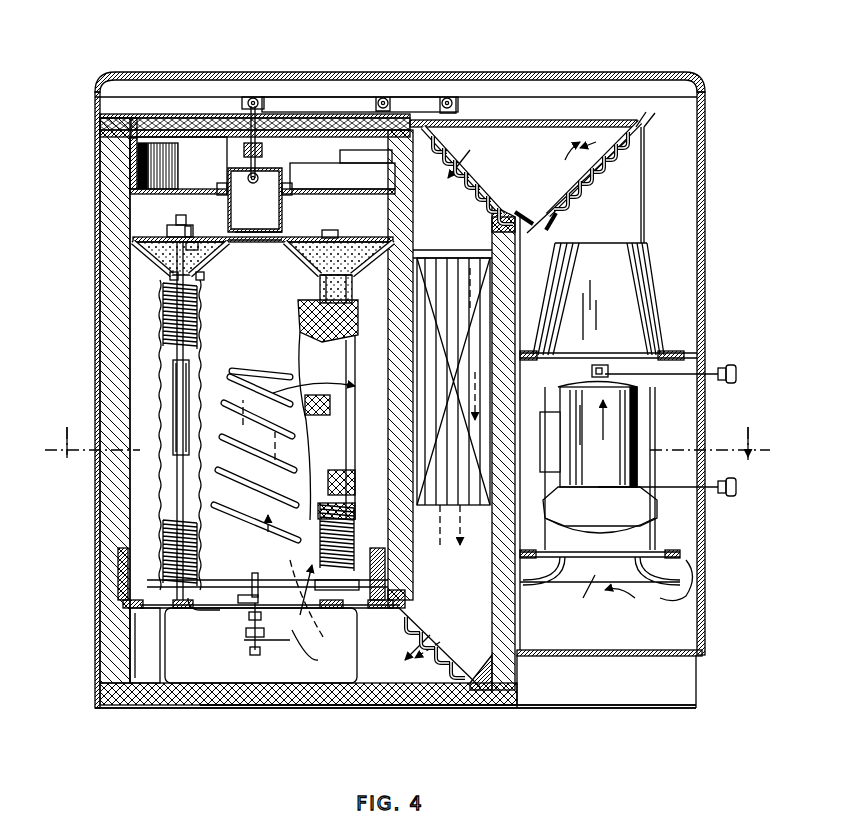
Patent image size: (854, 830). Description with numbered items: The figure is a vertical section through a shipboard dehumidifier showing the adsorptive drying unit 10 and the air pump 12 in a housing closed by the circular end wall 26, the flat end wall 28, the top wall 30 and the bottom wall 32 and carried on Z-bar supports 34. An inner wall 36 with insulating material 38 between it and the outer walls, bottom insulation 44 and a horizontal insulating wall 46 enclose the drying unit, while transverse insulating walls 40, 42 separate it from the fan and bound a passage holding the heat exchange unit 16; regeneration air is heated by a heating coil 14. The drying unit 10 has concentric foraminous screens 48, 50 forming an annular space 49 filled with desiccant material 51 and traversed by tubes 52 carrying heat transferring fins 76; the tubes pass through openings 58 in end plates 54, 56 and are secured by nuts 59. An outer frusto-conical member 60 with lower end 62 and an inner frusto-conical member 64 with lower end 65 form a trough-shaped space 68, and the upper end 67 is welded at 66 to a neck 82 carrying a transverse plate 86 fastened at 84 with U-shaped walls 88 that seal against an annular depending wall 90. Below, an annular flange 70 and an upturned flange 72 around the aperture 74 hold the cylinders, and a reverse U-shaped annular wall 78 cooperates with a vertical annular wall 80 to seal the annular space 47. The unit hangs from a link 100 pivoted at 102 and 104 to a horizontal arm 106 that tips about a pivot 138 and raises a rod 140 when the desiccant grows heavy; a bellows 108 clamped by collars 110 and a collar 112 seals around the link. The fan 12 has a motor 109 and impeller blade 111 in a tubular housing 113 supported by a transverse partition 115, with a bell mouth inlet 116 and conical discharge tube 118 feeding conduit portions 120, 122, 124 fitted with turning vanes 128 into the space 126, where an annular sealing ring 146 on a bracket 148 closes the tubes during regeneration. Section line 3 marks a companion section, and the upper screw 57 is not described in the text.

The section line 3— 3 is at (407, 434).
The drying unit 10 is at (147, 349).
The air pump 12 is at (585, 598).
The heating coil 14 is at (252, 370).
The heat exchange unit 16 is at (484, 305).
The circular end wall 26 is at (99, 275).
The flat end wall 28 is at (698, 624).
The top wall 30 is at (311, 72).
The bottom wall 32 is at (543, 657).
The Z-bar supports 34 is at (290, 708).
The inner wall 36 is at (118, 323).
The insulating material 38 is at (100, 118).
The transverse insulating wall 40 is at (492, 250).
The transverse insulating wall 42 is at (415, 225).
The bottom insulation 44 is at (140, 706).
The horizontal insulating wall 46 is at (167, 116).
The annular space 47 is at (178, 393).
The outer cylindrical foraminous screen 48 is at (312, 335).
The annular space 49 is at (173, 473).
The inner cylindrical foraminous screen 50 is at (198, 318).
The desiccant material 51 is at (352, 265).
The tubes 52 is at (172, 223).
The end plate 54 is at (364, 548).
The end plate 56 is at (288, 238).
The drive shaft 57 is at (174, 592).
The openings 58 is at (339, 238).
The nuts 59 is at (192, 229).
The outer frusto-conical member 60 is at (158, 262).
The lower end of outer frusto-conical member 62 is at (170, 279).
The inner frusto-conical member 64 is at (227, 251).
The lower end of inner frusto-conical member 65 is at (205, 278).
The weld 66 is at (278, 231).
The upper end of inner frusto-conical member 67 is at (237, 238).
The annular trough-shaped space 68 is at (194, 258).
The annular flange 70 is at (160, 575).
The upturned flange 72 is at (201, 580).
The aperture 74 is at (267, 571).
The heat transferring fins 76 is at (198, 511).
The reverse U-shaped annular wall 78 is at (118, 552).
The vertical annular wall 80 is at (138, 596).
The neck 82 is at (284, 173).
The fastening 84 is at (216, 185).
The transverse plate 86 is at (333, 173).
The U-shaped walls 88 is at (333, 188).
The annular depending wall 90 is at (135, 135).
The link 100 is at (263, 150).
The pivot 102 is at (241, 196).
The pivot 104 is at (254, 98).
The horizontal arm 106 is at (326, 109).
The bellows 108 is at (241, 149).
The motor 109 is at (645, 423).
The collars 110 is at (226, 176).
The impeller blade 111 is at (656, 505).
The collar 112 is at (300, 164).
The tubular housing 113 is at (665, 533).
The transverse partition 115 is at (690, 354).
The bell mouth inlet 116 is at (681, 568).
The conical discharge tube 118 is at (660, 302).
The vertical conduit portion 120 is at (645, 196).
The horizontal conduit portion 122 is at (517, 122).
The vertical conduit portion 124 is at (446, 558).
The space 126 is at (366, 641).
The turning vanes 128 is at (470, 173).
The pivot 138 is at (386, 97).
The rod 140 is at (457, 106).
The annular sealing ring 146 is at (294, 608).
The bracket 148 is at (358, 665).